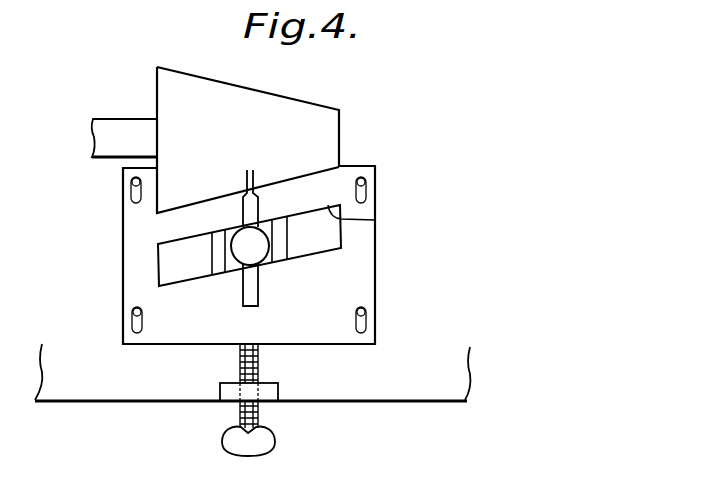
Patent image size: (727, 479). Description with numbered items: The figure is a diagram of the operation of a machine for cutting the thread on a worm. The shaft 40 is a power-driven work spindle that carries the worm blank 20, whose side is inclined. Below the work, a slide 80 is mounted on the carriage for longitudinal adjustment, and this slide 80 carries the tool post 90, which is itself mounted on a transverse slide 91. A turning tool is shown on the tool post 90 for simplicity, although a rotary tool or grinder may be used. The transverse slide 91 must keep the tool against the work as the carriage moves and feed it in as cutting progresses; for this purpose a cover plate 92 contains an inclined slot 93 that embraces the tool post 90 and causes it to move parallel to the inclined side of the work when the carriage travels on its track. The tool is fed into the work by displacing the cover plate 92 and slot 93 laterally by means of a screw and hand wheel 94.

The worm blank 20 is at (336, 115).
The shaft 40 is at (108, 143).
The slide 80 is at (290, 238).
The tool post 90 is at (260, 252).
The transverse slide 91 is at (265, 222).
The cover plate 92 is at (375, 258).
The inclined slot 93 is at (375, 220).
The screw and hand wheel 94 is at (263, 440).